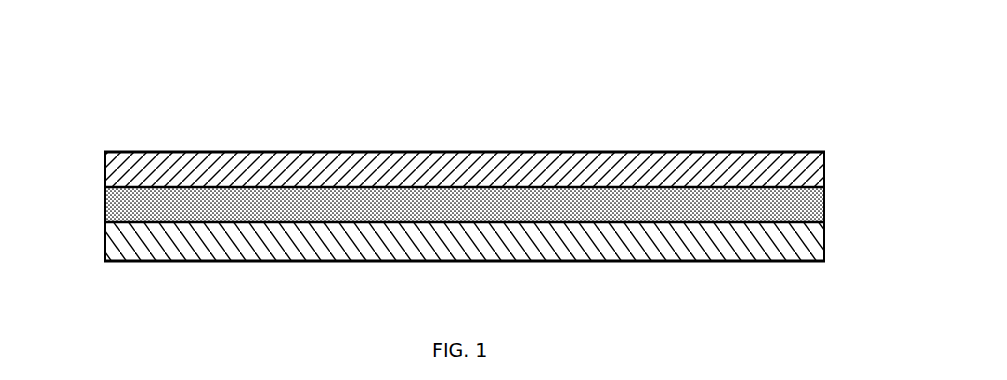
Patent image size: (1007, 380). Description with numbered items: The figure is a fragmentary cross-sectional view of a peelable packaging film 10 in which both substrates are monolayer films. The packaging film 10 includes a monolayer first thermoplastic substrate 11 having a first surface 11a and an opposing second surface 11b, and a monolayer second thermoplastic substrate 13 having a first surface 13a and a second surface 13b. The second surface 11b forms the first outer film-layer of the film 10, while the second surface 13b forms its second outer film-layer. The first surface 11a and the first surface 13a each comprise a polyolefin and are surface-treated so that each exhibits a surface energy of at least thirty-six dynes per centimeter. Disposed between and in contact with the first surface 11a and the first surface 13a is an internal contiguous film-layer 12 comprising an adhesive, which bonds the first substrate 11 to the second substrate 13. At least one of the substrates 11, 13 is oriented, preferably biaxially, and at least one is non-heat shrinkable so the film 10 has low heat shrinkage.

The packaging film 10 is at (498, 80).
The first thermoplastic substrate 11 is at (106, 169).
The first surface 11a is at (191, 187).
The second surface 11b is at (304, 151).
The internal contiguous film-layer 12 is at (824, 206).
The second thermoplastic substrate 13 is at (308, 262).
The first surface 13a is at (233, 222).
The second surface 13b is at (700, 262).